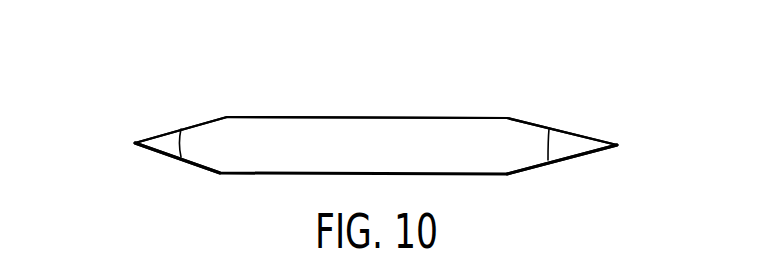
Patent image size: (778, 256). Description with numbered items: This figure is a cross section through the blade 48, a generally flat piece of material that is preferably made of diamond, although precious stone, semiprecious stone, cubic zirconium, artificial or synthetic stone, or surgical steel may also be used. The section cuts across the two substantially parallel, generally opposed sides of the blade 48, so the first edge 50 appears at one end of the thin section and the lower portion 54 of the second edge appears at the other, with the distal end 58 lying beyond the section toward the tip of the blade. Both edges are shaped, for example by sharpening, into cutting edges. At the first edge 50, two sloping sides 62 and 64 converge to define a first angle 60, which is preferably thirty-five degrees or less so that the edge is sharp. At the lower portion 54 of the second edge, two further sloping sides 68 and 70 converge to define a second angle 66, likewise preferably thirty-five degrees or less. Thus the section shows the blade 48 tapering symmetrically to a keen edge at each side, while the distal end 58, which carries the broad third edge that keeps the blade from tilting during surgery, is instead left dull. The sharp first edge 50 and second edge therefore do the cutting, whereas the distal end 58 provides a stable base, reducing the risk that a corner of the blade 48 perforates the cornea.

The blade 48 is at (288, 93).
The first edge 50 is at (135, 143).
The lower portion 54 is at (618, 145).
The distal end 58 is at (358, 143).
The first angle 60 is at (182, 141).
The sloping side 62 is at (191, 127).
The sloping side 64 is at (185, 165).
The second angle 66 is at (545, 143).
The sloping side 68 is at (563, 133).
The sloping side 70 is at (545, 167).